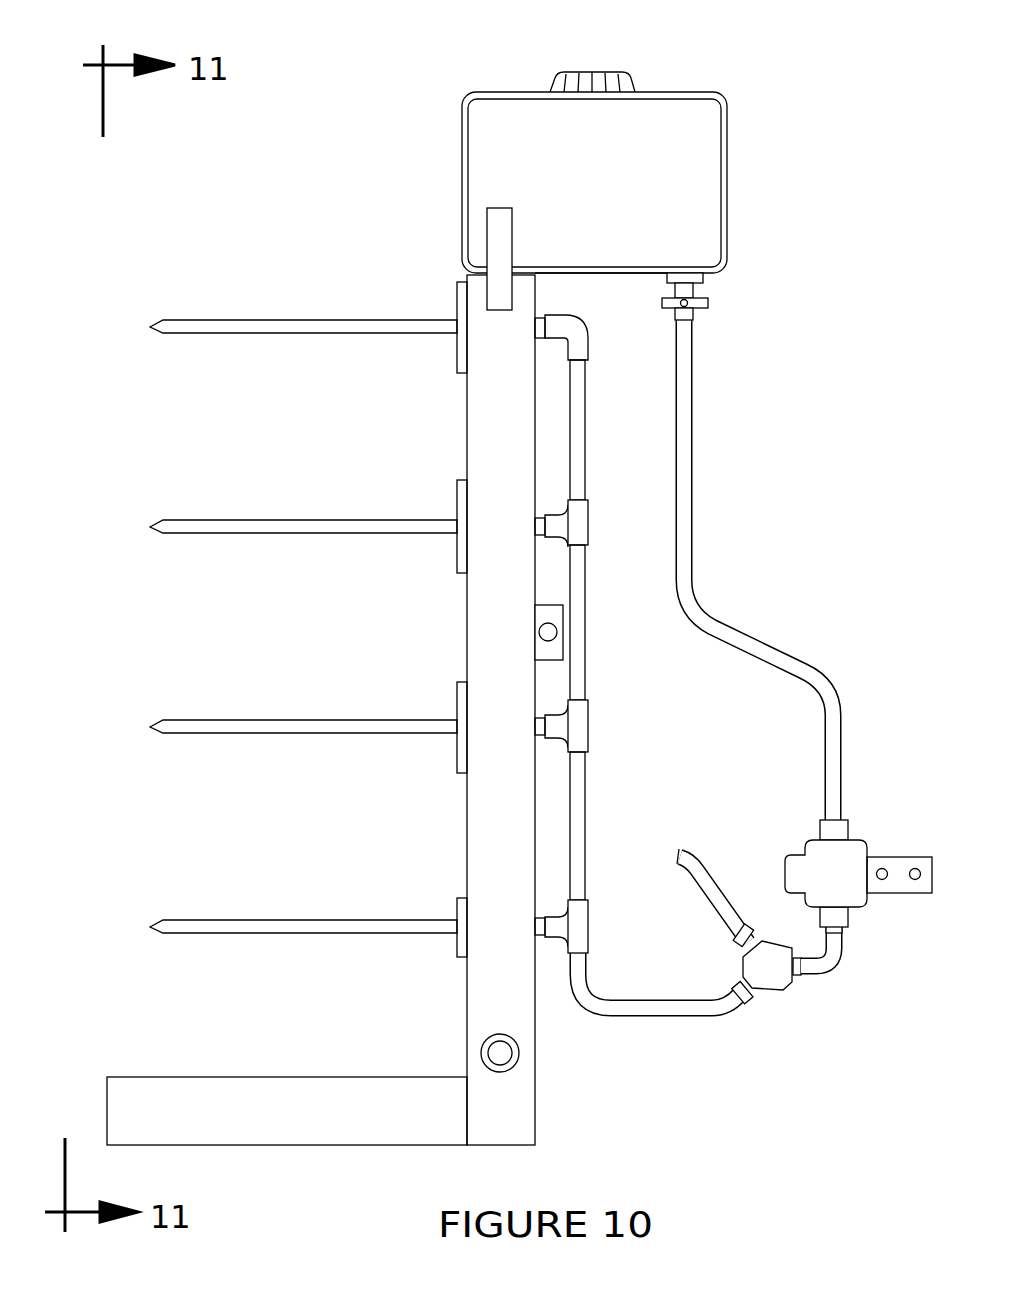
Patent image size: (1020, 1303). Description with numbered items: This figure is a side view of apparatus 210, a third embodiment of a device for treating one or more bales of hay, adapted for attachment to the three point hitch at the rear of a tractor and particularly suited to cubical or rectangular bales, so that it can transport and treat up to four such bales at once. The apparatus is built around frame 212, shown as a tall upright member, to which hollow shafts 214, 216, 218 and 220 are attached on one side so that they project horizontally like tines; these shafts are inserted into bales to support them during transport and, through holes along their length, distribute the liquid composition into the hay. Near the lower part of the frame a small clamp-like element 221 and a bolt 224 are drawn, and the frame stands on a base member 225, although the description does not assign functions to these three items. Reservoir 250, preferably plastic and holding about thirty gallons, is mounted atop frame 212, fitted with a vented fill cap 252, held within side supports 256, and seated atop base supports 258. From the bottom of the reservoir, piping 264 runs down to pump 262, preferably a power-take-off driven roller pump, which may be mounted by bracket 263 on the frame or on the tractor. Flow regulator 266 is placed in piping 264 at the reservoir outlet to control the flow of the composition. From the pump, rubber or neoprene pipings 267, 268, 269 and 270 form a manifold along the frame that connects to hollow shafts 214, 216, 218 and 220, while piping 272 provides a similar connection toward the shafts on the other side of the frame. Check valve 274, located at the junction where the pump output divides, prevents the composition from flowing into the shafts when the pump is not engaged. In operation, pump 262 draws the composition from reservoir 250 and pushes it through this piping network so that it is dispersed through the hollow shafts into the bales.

The apparatus 210 is at (800, 81).
The frame 212 is at (512, 1120).
The hollow shaft 214 is at (310, 330).
The hollow shaft 216 is at (310, 525).
The hollow shaft 218 is at (310, 725).
The hollow shaft 220 is at (305, 925).
The clamp 221 is at (545, 612).
The mounting bolt 224 is at (478, 1057).
The base 225 is at (273, 1123).
The reservoir 250 is at (692, 185).
The fill cap 252 is at (594, 72).
The side support 256 is at (502, 217).
The base support 258 is at (575, 275).
The pump 262 is at (858, 887).
The bracket 263 is at (895, 865).
The piping 264 is at (738, 635).
The flow regulator 266 is at (707, 300).
The piping 267 is at (663, 1010).
The piping 268 is at (578, 782).
The piping 269 is at (578, 677).
The piping 270 is at (580, 437).
The piping 272 is at (712, 900).
The check valve 274 is at (768, 980).